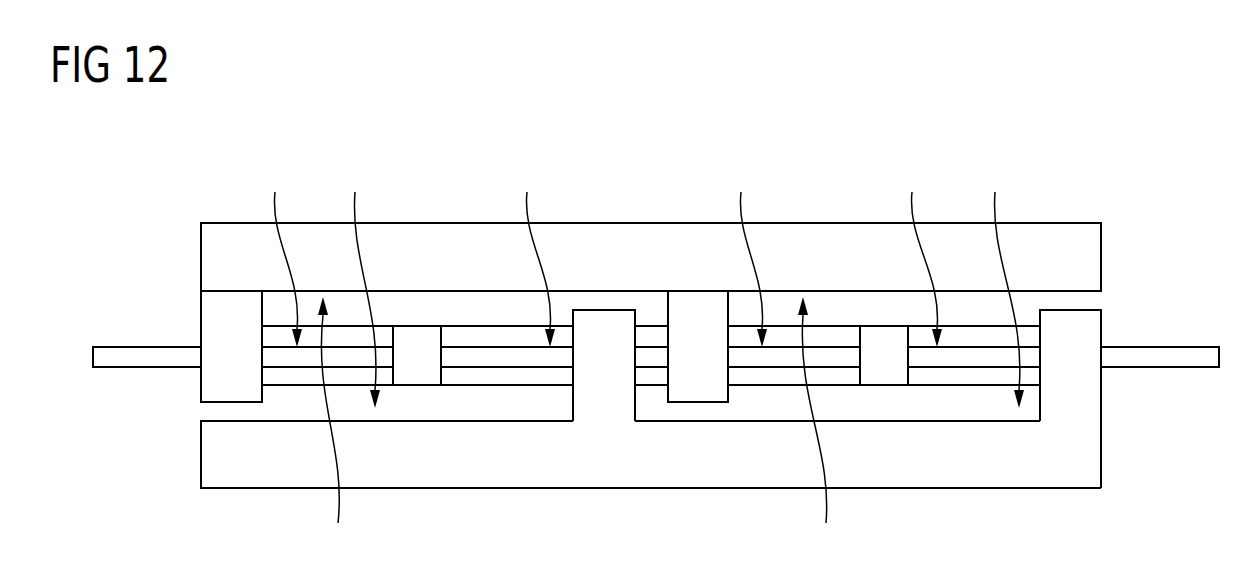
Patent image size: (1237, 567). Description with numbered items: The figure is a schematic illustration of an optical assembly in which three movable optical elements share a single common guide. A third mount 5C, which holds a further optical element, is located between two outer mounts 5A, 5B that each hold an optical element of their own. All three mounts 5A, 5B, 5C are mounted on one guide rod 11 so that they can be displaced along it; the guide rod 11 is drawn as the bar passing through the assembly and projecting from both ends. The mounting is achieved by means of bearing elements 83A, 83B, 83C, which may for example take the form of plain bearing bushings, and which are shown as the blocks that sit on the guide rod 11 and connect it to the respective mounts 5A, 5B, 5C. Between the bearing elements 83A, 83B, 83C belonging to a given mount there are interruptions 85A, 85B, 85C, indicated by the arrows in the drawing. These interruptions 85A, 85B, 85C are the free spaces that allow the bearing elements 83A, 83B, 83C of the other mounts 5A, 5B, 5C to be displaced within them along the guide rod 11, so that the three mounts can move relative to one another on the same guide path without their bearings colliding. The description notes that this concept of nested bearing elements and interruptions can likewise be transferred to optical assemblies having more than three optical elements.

The outer mount 5A is at (826, 242).
The outer mount 5B is at (968, 473).
The third mount 5C is at (476, 337).
The guide rod 11 is at (1145, 358).
The bearing element 83A is at (700, 383).
The bearing element 83B is at (1090, 325).
The bearing element 83C is at (884, 370).
The interruption 85A is at (576, 432).
The interruption 85B is at (678, 279).
The interruption 85C is at (597, 249).